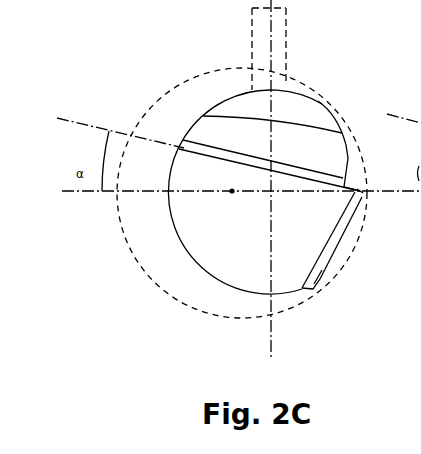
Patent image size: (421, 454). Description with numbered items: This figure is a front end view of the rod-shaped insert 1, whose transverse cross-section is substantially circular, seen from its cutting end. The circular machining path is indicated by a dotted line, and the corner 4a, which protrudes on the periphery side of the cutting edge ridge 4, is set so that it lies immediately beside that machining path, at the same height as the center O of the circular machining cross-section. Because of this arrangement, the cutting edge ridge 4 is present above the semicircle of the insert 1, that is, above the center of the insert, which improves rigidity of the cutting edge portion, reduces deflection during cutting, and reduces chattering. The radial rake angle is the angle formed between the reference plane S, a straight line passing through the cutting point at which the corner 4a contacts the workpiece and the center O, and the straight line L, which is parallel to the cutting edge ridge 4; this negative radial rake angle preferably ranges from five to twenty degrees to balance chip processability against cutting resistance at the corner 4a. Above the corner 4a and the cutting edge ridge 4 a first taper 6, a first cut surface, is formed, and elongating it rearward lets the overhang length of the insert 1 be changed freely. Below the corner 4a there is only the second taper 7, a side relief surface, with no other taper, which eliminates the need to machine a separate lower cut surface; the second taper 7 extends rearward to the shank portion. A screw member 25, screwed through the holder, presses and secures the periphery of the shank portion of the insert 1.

The insert 1 is at (111, 122).
The cutting edge ridge 4 is at (203, 116).
The corner 4a is at (362, 189).
The first taper (first cut surface) 6 is at (333, 112).
The second taper (side relief surface) 7 is at (341, 238).
The screw member 25 is at (283, 33).
The reference plane S is at (228, 195).
The straight line parallel to the cutting edge ridge L is at (402, 109).
The center of circular machining cross-section O is at (225, 206).